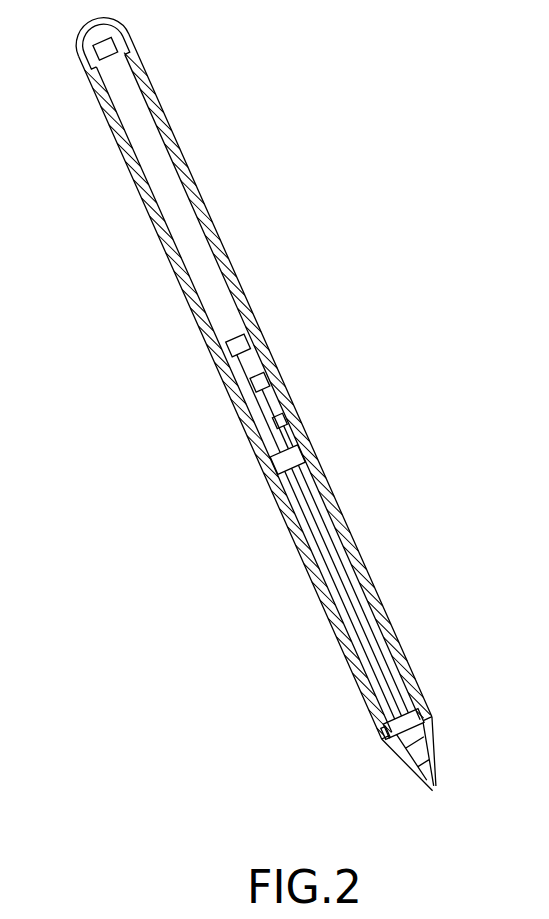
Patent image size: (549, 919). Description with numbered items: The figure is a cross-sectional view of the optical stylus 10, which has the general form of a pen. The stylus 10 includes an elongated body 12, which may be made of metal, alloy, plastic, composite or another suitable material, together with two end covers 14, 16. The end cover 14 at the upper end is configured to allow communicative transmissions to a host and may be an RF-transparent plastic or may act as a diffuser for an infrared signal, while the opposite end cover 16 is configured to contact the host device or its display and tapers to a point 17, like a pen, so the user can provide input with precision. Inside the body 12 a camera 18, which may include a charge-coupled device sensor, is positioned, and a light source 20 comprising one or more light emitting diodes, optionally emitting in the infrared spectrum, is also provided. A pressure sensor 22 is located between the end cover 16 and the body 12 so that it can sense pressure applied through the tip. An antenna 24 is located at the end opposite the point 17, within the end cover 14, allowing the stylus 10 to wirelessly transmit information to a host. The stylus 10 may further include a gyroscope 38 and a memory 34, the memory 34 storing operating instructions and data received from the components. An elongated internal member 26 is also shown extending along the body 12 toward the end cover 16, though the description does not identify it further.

The optical stylus 10 is at (308, 92).
The body 12 is at (233, 272).
The end cover 14 is at (123, 40).
The end cover 16 is at (424, 727).
The point 17 is at (437, 753).
The camera 18 is at (301, 455).
The light source 20 is at (283, 415).
The pressure sensor 22 is at (380, 731).
The antenna 24 is at (84, 56).
The shaft 26 is at (346, 574).
The memory 34 is at (250, 337).
The gyroscope 38 is at (268, 380).